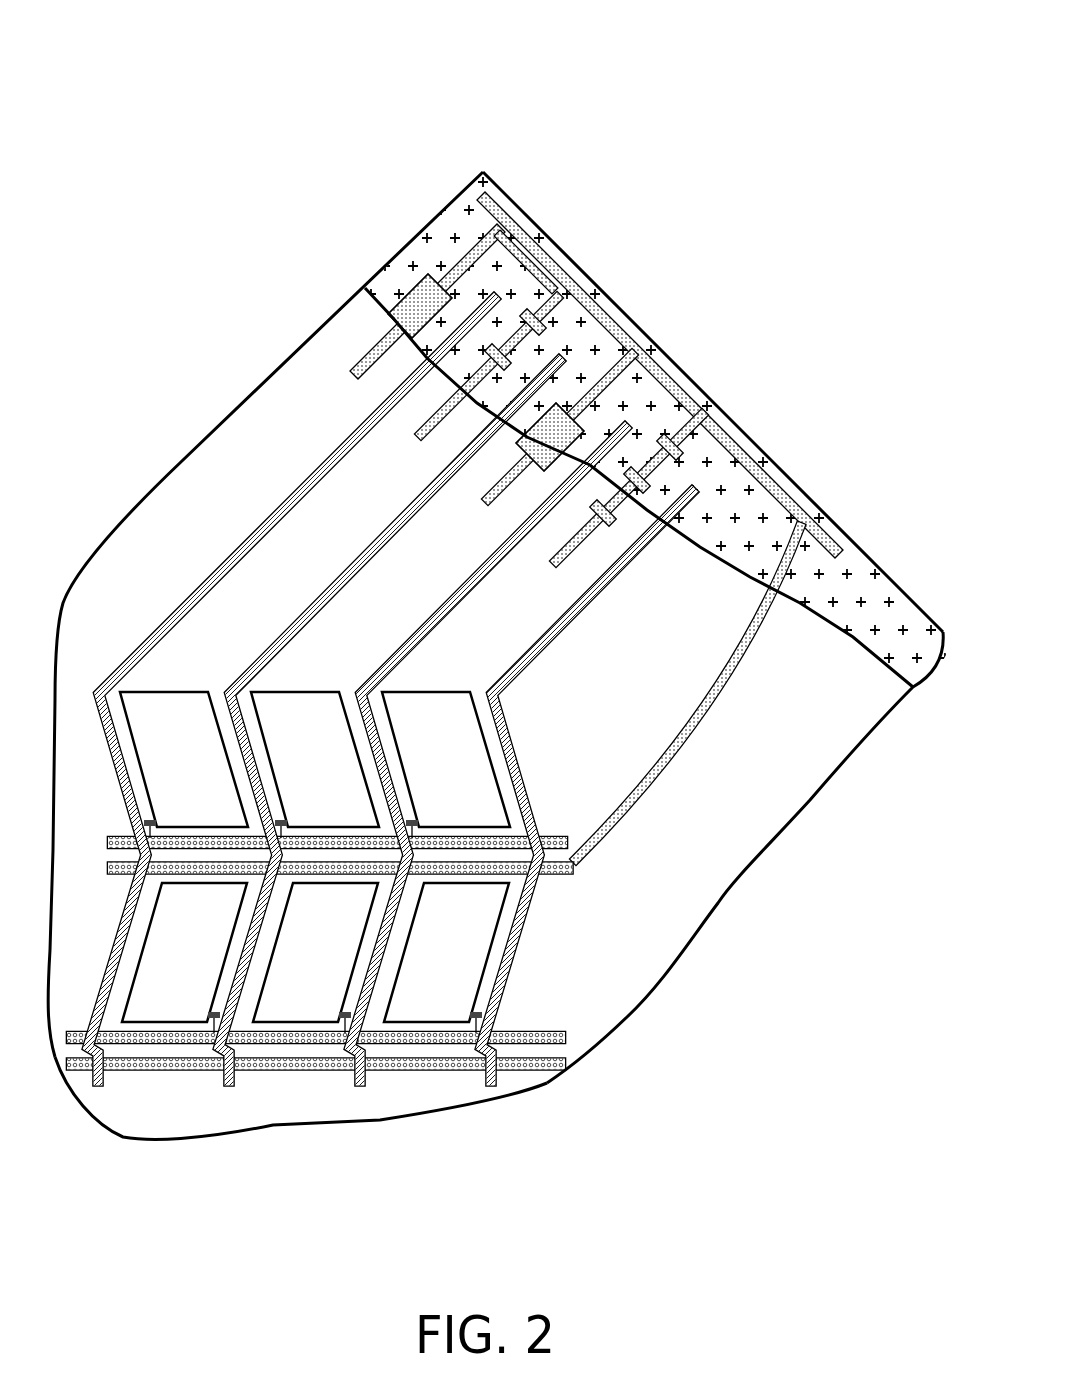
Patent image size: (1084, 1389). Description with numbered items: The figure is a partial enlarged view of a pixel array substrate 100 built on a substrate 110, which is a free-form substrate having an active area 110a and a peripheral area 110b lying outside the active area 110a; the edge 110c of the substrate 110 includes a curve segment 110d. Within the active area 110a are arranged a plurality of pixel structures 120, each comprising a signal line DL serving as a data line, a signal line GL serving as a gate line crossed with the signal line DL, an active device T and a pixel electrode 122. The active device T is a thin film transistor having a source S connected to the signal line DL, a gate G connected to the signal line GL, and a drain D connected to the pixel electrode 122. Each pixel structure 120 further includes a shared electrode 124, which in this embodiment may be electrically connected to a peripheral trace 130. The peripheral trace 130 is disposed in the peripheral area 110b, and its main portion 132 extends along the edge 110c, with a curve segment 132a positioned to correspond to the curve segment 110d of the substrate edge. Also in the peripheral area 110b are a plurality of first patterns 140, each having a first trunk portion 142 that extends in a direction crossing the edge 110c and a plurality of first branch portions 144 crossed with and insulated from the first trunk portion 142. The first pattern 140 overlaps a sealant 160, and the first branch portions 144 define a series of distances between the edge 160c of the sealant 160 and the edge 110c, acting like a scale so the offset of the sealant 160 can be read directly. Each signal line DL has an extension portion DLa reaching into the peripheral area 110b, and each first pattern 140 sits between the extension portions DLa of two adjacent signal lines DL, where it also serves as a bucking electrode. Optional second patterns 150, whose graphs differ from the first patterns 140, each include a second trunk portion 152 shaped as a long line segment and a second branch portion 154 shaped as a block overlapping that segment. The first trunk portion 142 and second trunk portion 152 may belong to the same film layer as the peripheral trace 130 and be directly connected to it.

The pixel array substrate 100 is at (503, 597).
The substrate 110 is at (495, 618).
The active area 110a is at (557, 969).
The peripheral area 110b is at (236, 446).
The edge 110c is at (527, 205).
The curve segment 110d is at (713, 364).
The pixel structure 120 is at (373, 597).
The active device T is at (379, 516).
The pixel electrode 122 is at (480, 727).
The shared electrode 124 is at (110, 870).
The peripheral trace 130 is at (658, 529).
The main portion 132 is at (658, 529).
The curve segment 132a is at (787, 493).
The first pattern 140 is at (727, 409).
The first trunk portion 142 is at (647, 437).
The first branch portion 144 is at (620, 380).
The second pattern 150 is at (580, 357).
The second trunk portion 152 is at (645, 400).
The second branch portion 154 is at (592, 385).
The sealant 160 is at (900, 607).
The edge of the sealant 160c is at (851, 645).
The signal line DL is at (103, 1083).
The extension portion DLa is at (520, 663).
The signal line GL is at (120, 837).
The source S is at (410, 813).
The drain D is at (417, 823).
The gate G is at (423, 827).